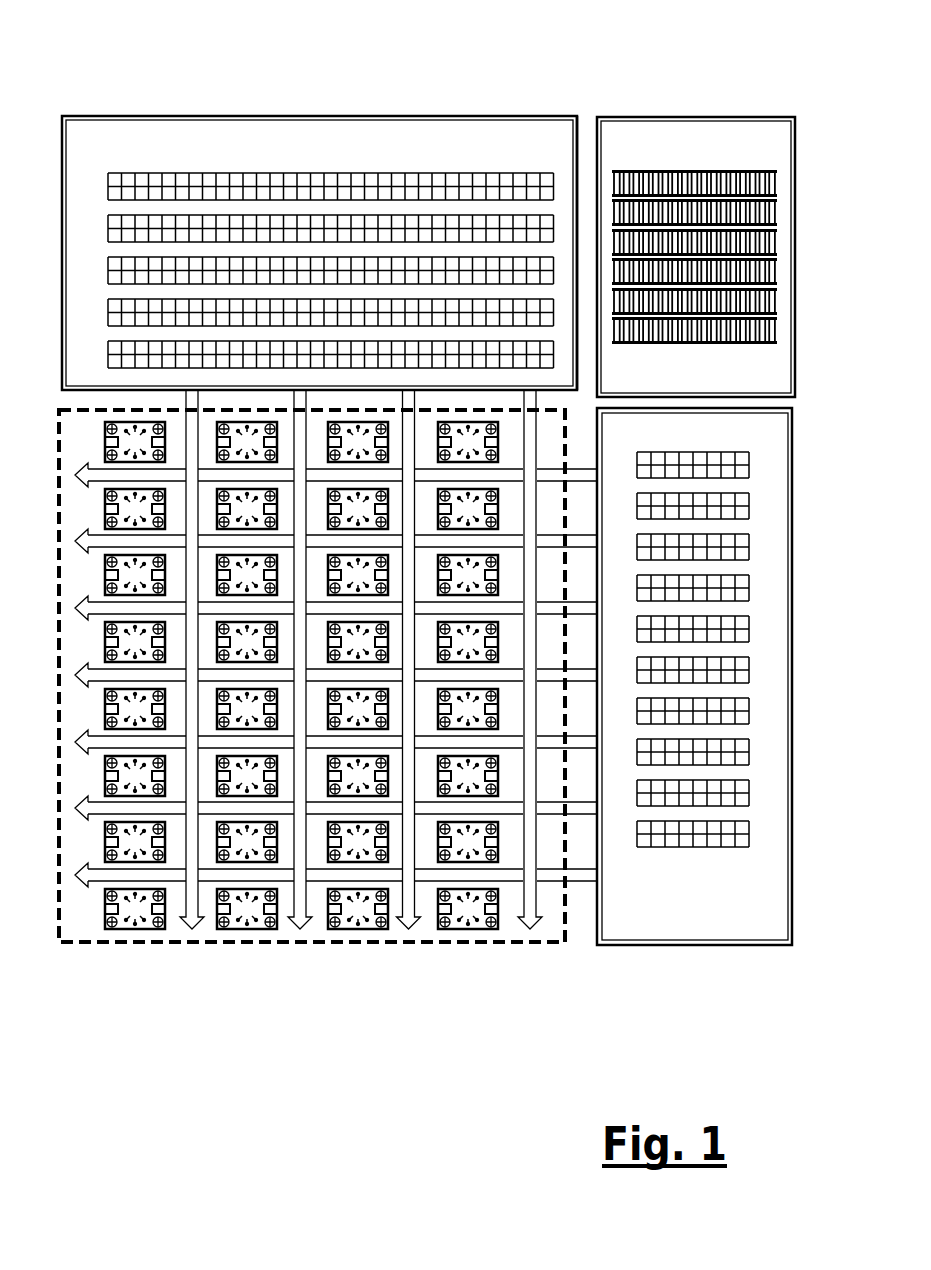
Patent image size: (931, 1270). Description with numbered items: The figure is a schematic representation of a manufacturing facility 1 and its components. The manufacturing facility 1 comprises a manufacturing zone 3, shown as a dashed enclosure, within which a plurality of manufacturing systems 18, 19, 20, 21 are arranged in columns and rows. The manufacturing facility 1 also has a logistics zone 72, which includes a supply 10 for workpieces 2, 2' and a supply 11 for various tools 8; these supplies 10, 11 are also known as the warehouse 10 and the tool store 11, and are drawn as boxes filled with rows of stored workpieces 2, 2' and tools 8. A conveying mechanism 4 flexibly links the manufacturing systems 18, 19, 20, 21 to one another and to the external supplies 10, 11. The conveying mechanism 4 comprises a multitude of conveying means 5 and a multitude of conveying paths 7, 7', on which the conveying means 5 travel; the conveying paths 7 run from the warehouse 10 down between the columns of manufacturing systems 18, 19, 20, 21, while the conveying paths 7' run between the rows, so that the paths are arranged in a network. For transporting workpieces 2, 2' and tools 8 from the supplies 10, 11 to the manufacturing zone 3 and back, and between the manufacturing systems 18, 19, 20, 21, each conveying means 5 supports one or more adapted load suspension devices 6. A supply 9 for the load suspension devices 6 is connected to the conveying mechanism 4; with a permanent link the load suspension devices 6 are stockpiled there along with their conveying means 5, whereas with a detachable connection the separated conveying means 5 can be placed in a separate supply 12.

The manufacturing facility 1 is at (167, 92).
The workpieces 2 is at (331, 210).
The workpieces 2' is at (331, 210).
The manufacturing zone 3 is at (497, 947).
The conveying mechanism 4 is at (572, 890).
The conveying means 5 is at (694, 199).
The load suspension devices 6 is at (727, 170).
The conveying paths 7 is at (361, 706).
The conveying paths 7' is at (299, 743).
The tools 8 is at (678, 843).
The supply for load suspension devices 9 is at (696, 210).
The warehouse 10 is at (337, 115).
The tool store 11 is at (736, 947).
The separate supply 12 is at (677, 115).
The manufacturing system 18 is at (120, 917).
The manufacturing system 19 is at (355, 922).
The manufacturing system 20 is at (465, 922).
The manufacturing system 21 is at (487, 445).
The logistics zone 72 is at (560, 105).